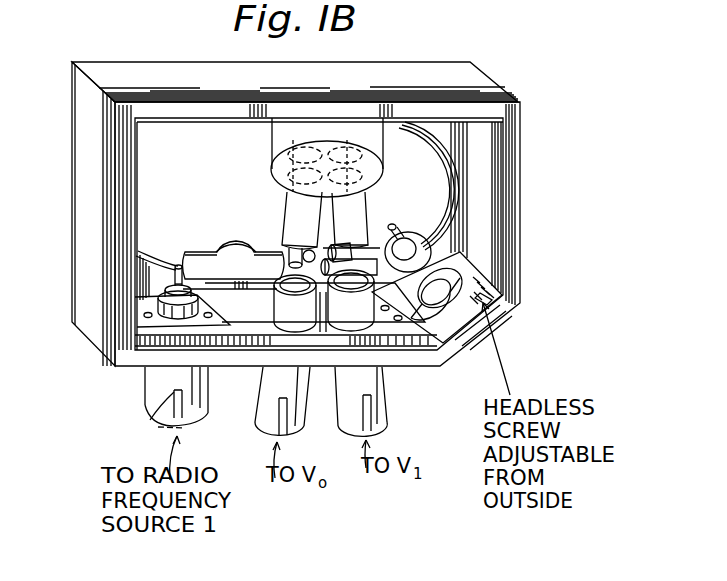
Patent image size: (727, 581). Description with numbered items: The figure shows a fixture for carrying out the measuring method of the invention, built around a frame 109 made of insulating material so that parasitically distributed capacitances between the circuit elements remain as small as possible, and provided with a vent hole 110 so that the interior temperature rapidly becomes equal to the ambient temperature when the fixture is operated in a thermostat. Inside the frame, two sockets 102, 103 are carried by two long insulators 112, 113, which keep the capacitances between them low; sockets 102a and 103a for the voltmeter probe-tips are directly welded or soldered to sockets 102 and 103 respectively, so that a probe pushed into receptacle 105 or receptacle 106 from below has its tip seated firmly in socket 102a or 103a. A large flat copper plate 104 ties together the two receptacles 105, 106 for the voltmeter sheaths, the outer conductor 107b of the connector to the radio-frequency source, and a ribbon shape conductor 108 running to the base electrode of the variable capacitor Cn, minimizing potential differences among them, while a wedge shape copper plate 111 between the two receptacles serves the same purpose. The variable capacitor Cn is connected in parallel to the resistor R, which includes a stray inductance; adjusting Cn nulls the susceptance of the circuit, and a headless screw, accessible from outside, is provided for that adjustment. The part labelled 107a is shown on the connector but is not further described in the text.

The frame 109 is at (165, 68).
The vent hole 110 is at (137, 121).
The flat copper plate 104 is at (143, 350).
The long insulator 113 is at (357, 225).
The socket 103 is at (292, 232).
The long insulator 112 is at (285, 226).
The socket 102 is at (283, 269).
The socket for probe-tip 102a is at (280, 258).
The socket for probe-tip 103a is at (392, 240).
The ribbon shape conductor 108 is at (433, 320).
The variable capacitor Cn is at (462, 305).
The resistor R is at (428, 330).
The receptacle for voltmeter-sheath 105 is at (272, 391).
The receptacle for voltmeter-sheath 106 is at (377, 403).
The outer conductor of connector 107b is at (150, 383).
The connector slot 107a is at (183, 412).
The wedge shape copper plate 111 is at (324, 300).